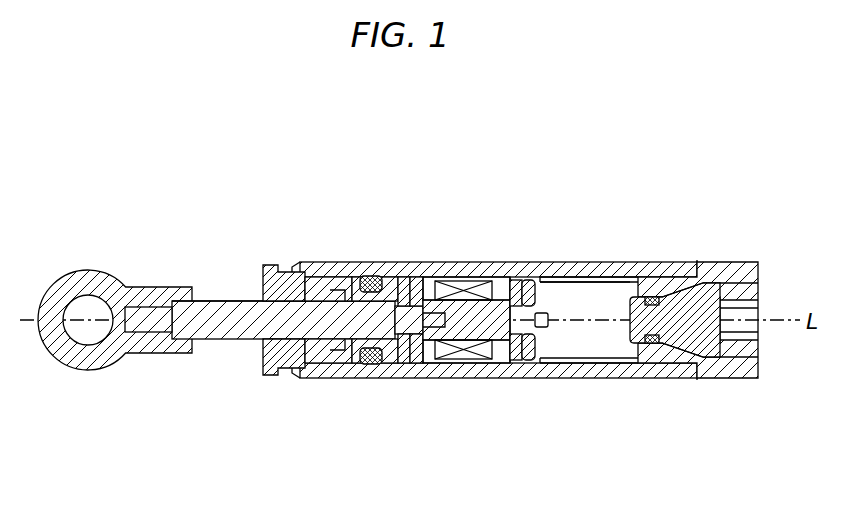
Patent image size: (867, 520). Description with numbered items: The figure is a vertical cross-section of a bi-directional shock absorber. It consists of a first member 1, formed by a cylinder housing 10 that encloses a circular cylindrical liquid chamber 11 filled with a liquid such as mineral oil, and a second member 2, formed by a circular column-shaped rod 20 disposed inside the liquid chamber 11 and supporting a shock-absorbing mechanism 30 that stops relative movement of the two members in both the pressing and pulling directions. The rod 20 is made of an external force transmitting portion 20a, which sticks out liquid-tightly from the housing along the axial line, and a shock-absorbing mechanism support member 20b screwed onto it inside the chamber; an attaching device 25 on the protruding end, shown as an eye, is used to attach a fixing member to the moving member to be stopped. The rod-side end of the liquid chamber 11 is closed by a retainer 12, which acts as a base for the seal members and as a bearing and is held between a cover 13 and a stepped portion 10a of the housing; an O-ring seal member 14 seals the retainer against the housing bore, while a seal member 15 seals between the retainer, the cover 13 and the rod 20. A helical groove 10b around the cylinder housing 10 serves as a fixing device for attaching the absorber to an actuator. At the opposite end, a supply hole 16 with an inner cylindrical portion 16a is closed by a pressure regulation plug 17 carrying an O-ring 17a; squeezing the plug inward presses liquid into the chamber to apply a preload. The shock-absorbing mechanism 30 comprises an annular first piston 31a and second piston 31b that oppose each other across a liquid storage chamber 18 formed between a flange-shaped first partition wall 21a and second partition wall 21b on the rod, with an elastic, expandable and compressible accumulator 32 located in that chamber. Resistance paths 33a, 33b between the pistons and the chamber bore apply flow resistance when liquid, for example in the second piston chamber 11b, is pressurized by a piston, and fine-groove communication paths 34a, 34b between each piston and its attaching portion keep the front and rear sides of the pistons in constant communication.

The first member 1 is at (693, 146).
The second member 2 is at (134, 206).
The cylinder housing 10 is at (633, 262).
The stepped portion 10a is at (398, 264).
The helical groove 10b is at (543, 262).
The liquid chamber 11 is at (592, 284).
The second piston chamber 11b is at (592, 335).
The retainer 12 is at (343, 378).
The cover 13 is at (268, 378).
The seal member 14 is at (364, 378).
The seal member 15 is at (316, 378).
The supply hole 16 is at (715, 352).
The cylindrical portion 16a is at (672, 345).
The pressure regulation plug 17 is at (728, 288).
The O-ring 17a is at (664, 292).
The liquid storage chamber 18 is at (500, 372).
The rod 20 is at (232, 376).
The external force transmitting portion 20a is at (216, 302).
The shock-absorbing mechanism support member 20b is at (458, 277).
The first partition wall 21a is at (437, 378).
The second partition wall 21b is at (520, 378).
The attaching device 25 is at (92, 362).
The shock-absorbing mechanism 30 is at (482, 260).
The first piston 31a is at (403, 378).
The second piston 31b is at (528, 345).
The accumulator 32 is at (460, 360).
The resistance path 33a is at (402, 277).
The resistance path 33b is at (521, 277).
The communication path 34a is at (414, 277).
The communication path 34b is at (562, 277).